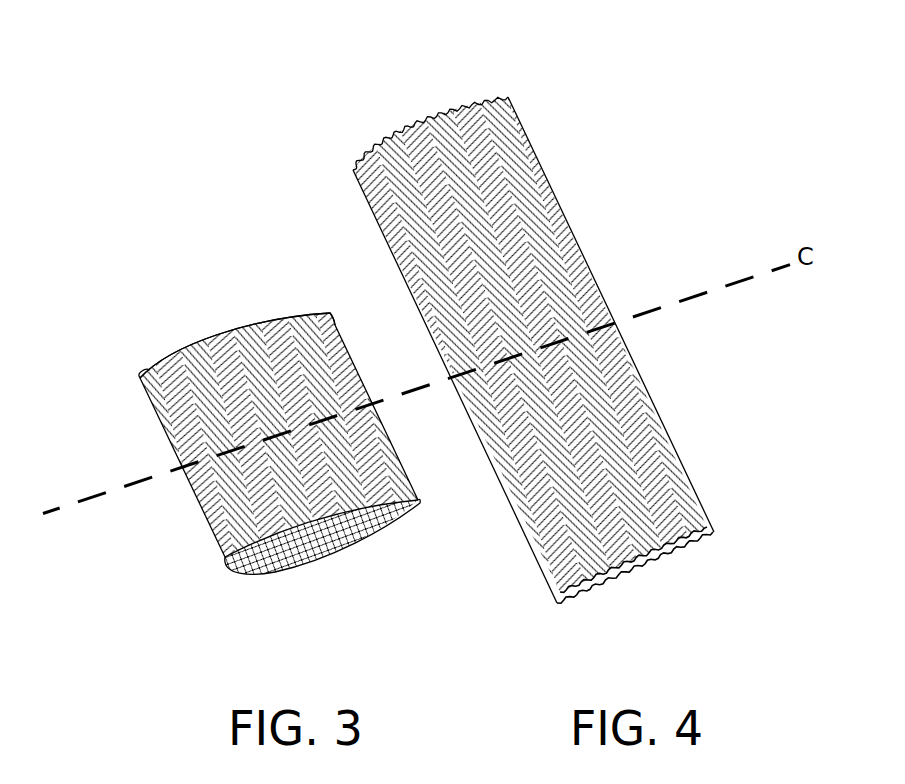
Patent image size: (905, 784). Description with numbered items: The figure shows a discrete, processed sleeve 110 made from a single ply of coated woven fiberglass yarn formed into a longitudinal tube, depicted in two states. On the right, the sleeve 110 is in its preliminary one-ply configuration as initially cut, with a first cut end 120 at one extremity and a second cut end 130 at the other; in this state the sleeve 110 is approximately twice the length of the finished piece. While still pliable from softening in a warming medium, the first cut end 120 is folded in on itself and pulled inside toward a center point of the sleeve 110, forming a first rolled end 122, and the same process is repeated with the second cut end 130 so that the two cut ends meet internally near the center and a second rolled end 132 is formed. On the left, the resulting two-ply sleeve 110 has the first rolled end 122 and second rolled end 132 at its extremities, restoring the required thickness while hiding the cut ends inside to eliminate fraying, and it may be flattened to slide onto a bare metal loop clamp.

In FIG. 3, the sleeve 110 is at (185, 378).
In FIG. 4, the sleeve 110 is at (610, 445).
In FIG. 4, the first cut end 120 is at (700, 500).
In FIG. 3, the first rolled end 122 is at (233, 555).
In FIG. 4, the second cut end 130 is at (453, 127).
In FIG. 3, the second rolled end 132 is at (142, 368).